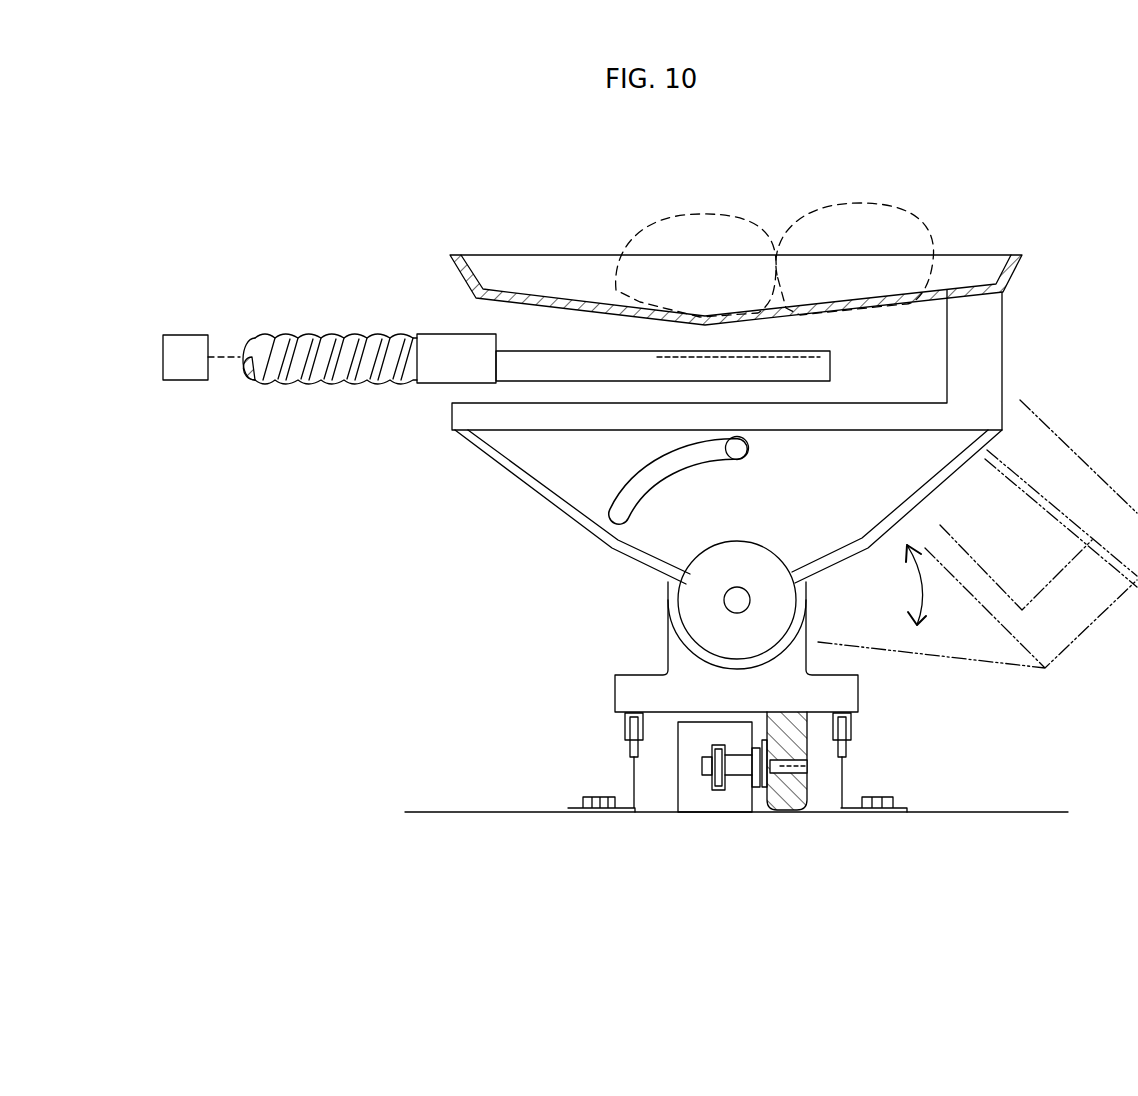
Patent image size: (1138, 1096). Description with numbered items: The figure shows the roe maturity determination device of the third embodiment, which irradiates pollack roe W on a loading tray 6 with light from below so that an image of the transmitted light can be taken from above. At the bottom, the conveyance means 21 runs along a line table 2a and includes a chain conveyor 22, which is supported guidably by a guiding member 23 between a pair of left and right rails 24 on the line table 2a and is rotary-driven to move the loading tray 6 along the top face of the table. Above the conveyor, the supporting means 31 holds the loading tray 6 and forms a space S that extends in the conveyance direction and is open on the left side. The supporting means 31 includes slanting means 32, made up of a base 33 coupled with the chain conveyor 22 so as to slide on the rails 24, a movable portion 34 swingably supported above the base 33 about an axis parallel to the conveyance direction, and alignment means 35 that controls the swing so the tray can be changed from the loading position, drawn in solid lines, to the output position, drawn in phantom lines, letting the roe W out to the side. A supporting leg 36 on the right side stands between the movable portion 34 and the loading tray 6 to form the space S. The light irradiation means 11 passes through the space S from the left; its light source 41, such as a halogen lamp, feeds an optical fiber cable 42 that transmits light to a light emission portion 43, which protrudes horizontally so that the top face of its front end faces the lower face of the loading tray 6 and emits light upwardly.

The loading tray 6 is at (546, 298).
The pollack roe W is at (700, 213).
The light source 41 is at (184, 333).
The optical fiber cable 42 is at (302, 337).
The light irradiation means 11 is at (381, 336).
The light emission portion 43 is at (583, 356).
The supporting leg 36 is at (990, 371).
The space S is at (878, 358).
The supporting means 31 is at (685, 571).
The alignment means 35 is at (608, 492).
The slanting means 32 is at (685, 626).
The base 33 is at (676, 647).
The movable portion 34 is at (668, 544).
The line table 2a is at (465, 808).
The rails 24 is at (630, 770).
The conveyance means 21 is at (787, 820).
The chain conveyor 22 is at (735, 772).
The guiding member 23 is at (708, 778).